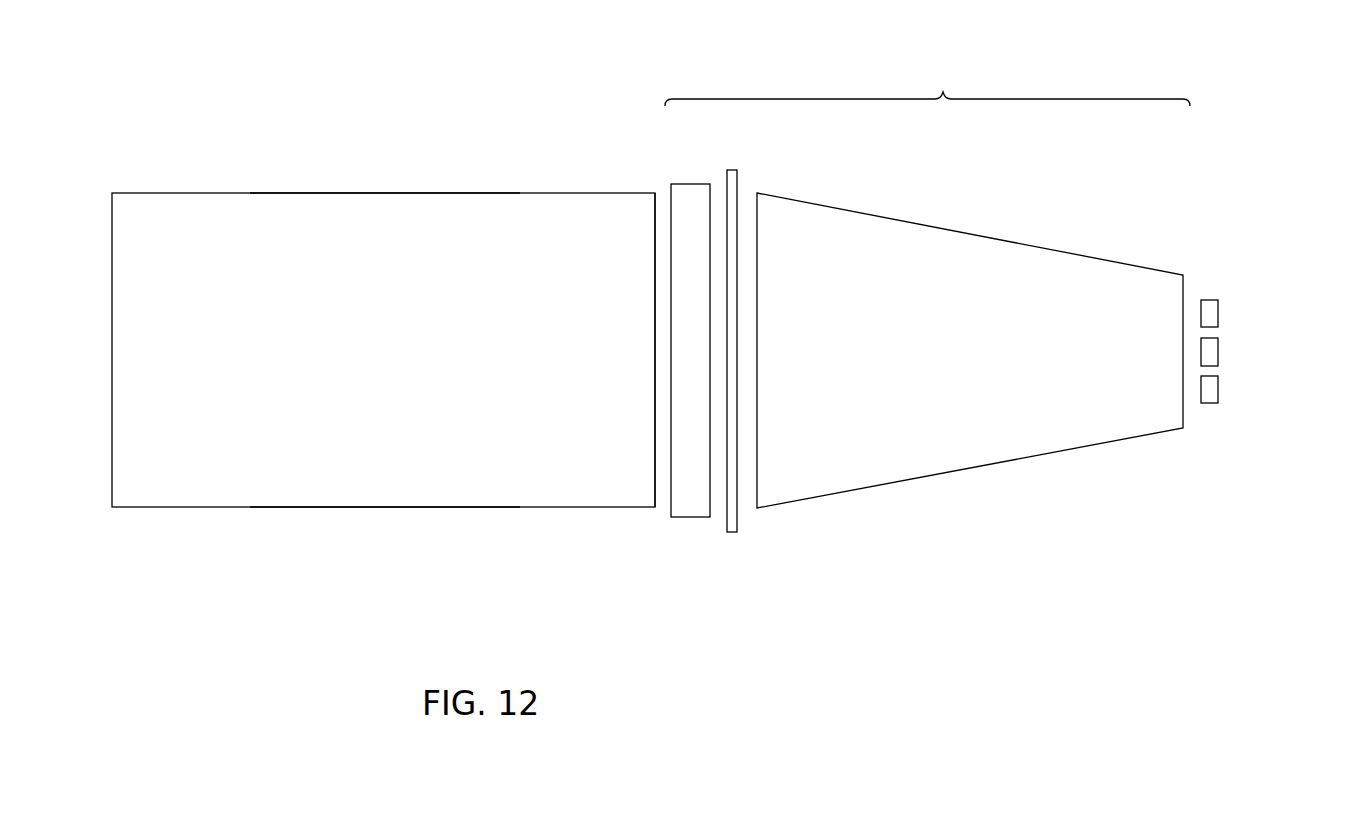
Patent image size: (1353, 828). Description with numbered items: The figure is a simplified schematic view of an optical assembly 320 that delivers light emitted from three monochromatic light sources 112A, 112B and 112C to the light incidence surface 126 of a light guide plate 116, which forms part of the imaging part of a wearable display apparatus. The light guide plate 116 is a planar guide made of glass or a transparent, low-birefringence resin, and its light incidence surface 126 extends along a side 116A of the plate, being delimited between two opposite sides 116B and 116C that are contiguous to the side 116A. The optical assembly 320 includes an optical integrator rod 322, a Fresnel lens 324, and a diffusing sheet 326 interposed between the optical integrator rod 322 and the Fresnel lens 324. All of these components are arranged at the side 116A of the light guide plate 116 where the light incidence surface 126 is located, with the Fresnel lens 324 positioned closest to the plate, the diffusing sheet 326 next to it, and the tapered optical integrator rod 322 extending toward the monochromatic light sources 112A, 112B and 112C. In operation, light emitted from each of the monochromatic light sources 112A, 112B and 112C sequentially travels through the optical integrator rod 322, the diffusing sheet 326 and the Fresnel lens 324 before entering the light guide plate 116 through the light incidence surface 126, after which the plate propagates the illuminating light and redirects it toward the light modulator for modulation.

The light guide plate 116 is at (404, 352).
The side of the light guide plate 116A is at (664, 237).
The side of the light guide plate 116B is at (387, 537).
The side of the light guide plate 116C is at (388, 168).
The light incidence surface 126 is at (656, 483).
The optical assembly 320 is at (927, 84).
The optical integrator rod 322 is at (990, 462).
The Fresnel lens 324 is at (691, 511).
The diffusing sheet 326 is at (732, 534).
The monochromatic light source 112A is at (1210, 392).
The monochromatic light source 112B is at (1210, 352).
The monochromatic light source 112C is at (1210, 314).